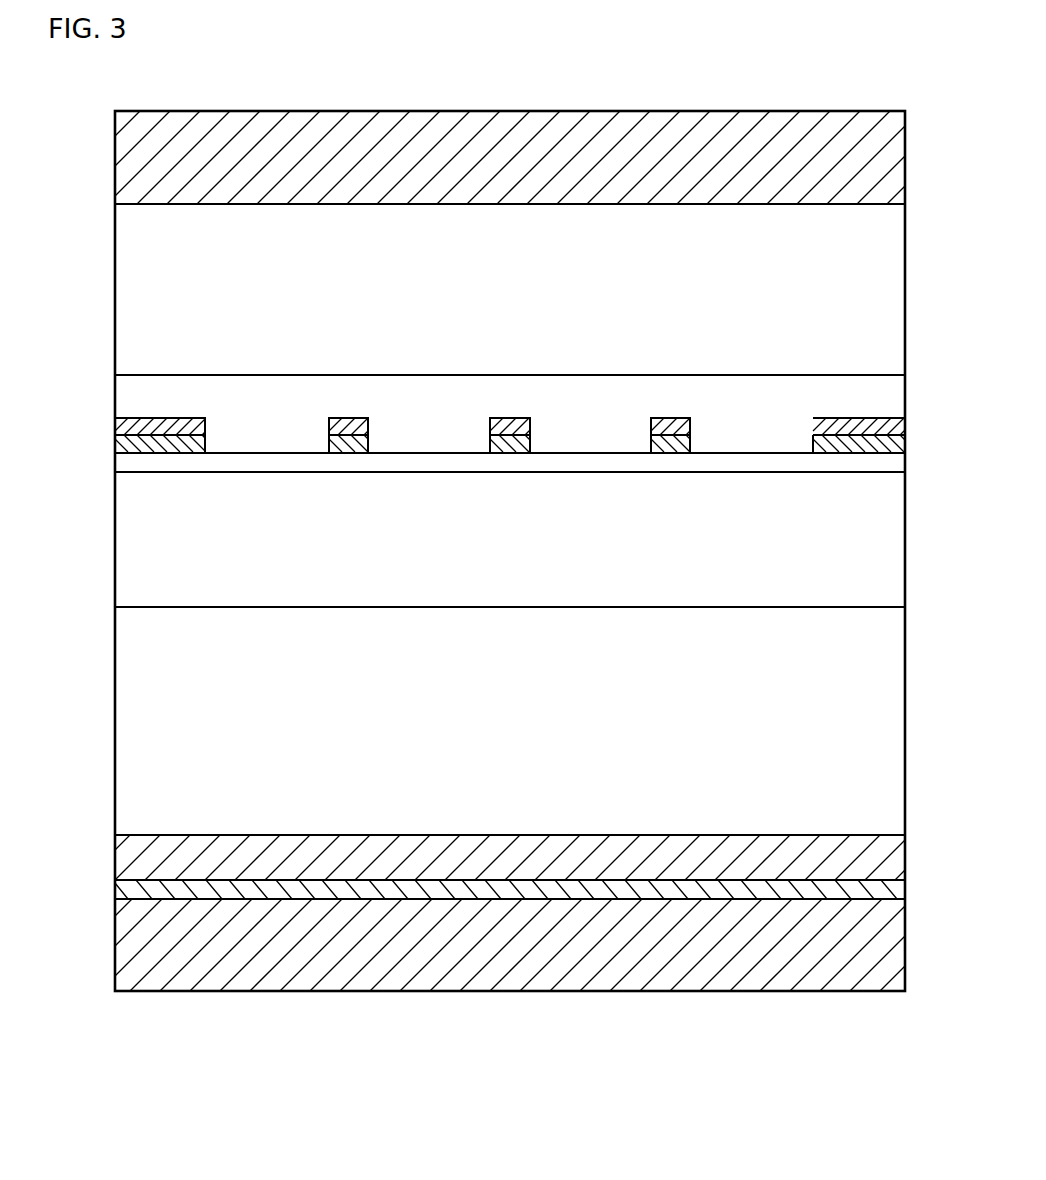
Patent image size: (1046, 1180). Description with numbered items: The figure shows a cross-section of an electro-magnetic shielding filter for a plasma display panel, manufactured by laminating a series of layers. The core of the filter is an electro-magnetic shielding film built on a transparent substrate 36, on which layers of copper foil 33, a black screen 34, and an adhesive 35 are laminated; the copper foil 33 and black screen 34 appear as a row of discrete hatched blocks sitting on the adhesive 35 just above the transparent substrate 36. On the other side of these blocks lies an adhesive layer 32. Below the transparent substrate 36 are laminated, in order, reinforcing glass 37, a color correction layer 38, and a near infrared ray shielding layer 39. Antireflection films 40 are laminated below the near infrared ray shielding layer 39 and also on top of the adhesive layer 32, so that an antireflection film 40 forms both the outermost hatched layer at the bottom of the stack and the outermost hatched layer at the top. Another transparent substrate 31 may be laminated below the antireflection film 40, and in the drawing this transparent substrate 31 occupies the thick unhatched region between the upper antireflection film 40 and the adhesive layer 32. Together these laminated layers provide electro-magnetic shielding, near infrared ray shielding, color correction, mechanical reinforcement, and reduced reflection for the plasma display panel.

The transparent substrate 31 is at (880, 272).
The adhesive layer 32 is at (887, 397).
The layers of copper foil 33 is at (898, 422).
The black screen 34 is at (895, 443).
The adhesive 35 is at (893, 463).
The transparent substrate 36 is at (880, 540).
The reinforcing glass 37 is at (880, 730).
The color correction layer 38 is at (893, 859).
The near infrared ray shielding layer 39 is at (893, 889).
The antireflection film 40 is at (882, 152).